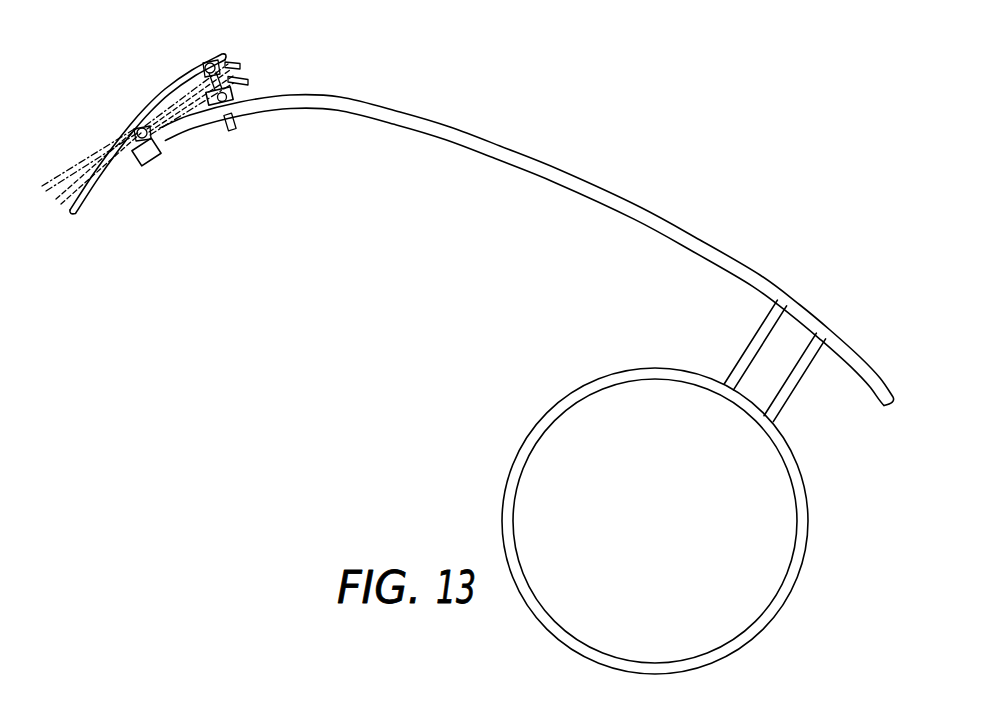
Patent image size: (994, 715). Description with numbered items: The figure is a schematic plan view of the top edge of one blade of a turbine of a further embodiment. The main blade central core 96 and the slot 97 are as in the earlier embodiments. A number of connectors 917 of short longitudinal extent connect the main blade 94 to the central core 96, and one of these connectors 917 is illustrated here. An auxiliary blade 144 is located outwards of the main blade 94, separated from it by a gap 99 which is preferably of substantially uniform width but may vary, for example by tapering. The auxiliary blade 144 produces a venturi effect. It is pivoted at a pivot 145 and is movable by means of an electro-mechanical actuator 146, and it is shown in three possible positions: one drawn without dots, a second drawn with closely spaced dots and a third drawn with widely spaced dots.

The main blade 94 is at (560, 169).
The main blade central core 96 is at (509, 477).
The slot 97 is at (533, 380).
The connectors 917 is at (760, 370).
The gap 99 is at (210, 138).
The auxiliary blade 144 is at (141, 78).
The pivot 145 is at (161, 160).
The electro-mechanical actuator 146 is at (232, 131).